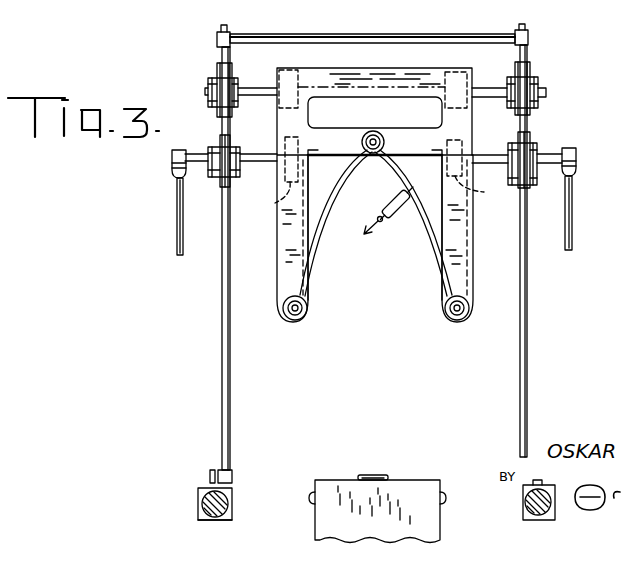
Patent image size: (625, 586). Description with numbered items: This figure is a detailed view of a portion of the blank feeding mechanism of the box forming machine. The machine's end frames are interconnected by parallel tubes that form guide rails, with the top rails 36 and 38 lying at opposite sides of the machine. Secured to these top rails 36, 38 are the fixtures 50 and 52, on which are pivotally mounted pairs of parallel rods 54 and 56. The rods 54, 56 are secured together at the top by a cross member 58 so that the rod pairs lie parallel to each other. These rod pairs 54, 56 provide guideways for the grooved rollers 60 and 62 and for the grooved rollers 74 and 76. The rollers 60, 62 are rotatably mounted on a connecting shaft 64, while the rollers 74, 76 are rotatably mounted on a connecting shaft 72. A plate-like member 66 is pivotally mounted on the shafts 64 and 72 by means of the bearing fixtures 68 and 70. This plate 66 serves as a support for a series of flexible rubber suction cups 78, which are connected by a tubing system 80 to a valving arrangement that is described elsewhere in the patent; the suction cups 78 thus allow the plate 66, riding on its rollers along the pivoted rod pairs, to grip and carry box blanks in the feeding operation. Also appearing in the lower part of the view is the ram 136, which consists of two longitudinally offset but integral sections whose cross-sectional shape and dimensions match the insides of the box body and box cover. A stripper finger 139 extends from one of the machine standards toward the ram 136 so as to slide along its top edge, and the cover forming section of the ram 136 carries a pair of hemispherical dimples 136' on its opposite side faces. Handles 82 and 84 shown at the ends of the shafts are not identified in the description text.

The top rail tube 36 is at (198, 507).
The top rail tube 38 is at (537, 515).
The fixture 50 is at (232, 518).
The fixture 52 is at (523, 495).
The parallel rod 54 is at (222, 333).
The parallel rod 56 is at (530, 347).
The cross member 58 is at (433, 33).
The grooved roller 60 is at (217, 72).
The grooved roller 62 is at (530, 73).
The connecting shaft 64 is at (258, 88).
The plate-like member 66 is at (420, 128).
The bearing fixture 68 is at (300, 69).
The bearing fixture 70 is at (379, 195).
The connecting shaft 72 is at (495, 155).
The grooved roller 74 is at (220, 138).
The grooved roller 76 is at (530, 137).
The flexible rubber suction cup 78 is at (373, 131).
The tubing system 80 is at (398, 176).
The handle 82 is at (177, 233).
The handle 84 is at (572, 218).
The ram 136 is at (359, 511).
The hemispherical dimple 136' is at (384, 480).
The stripper finger 139 is at (378, 475).